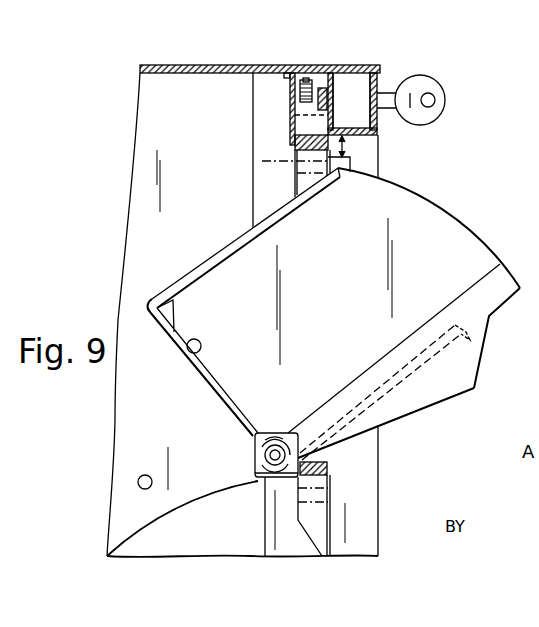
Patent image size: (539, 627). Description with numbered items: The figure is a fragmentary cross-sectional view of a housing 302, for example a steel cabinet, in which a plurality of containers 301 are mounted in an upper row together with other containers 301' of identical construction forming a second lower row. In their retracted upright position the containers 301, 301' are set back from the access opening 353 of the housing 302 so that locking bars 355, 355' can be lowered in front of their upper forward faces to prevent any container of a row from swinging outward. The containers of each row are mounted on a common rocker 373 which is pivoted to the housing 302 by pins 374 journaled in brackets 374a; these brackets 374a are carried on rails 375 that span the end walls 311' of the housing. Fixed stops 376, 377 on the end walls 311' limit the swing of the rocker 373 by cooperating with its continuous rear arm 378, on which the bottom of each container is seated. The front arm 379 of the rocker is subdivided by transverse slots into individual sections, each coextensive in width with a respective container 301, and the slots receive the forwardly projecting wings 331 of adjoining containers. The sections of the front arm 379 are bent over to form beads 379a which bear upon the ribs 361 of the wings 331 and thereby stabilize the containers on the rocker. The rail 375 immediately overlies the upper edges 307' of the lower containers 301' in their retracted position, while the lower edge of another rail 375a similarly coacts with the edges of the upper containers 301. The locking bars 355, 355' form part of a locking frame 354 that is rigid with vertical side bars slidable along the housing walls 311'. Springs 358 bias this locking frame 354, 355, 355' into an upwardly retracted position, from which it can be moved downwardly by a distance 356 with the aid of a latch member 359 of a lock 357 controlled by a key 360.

The containers 301 is at (340, 313).
The containers 301' is at (242, 568).
The housing 302 is at (177, 65).
The upper edges 307' is at (145, 518).
The end walls 311' is at (206, 314).
The wings 331 is at (453, 392).
The access opening 353 is at (372, 153).
The locking frame 354 is at (303, 180).
The locking bar 355 is at (262, 161).
The locking bar 355' is at (335, 508).
The clearance gap 356 is at (347, 160).
The lock 357 is at (377, 66).
The springs 358 is at (300, 86).
The latch member 359 is at (360, 83).
The key 360 is at (444, 102).
The ribs 361 is at (462, 350).
The rocker 373 is at (223, 413).
The pins 374 is at (273, 448).
The brackets 374a is at (254, 455).
The rail 375 is at (257, 483).
The rail 375a is at (290, 125).
The fixed stop 376 is at (138, 481).
The fixed stop 377 is at (200, 340).
The rear arm 378 is at (189, 364).
The front arm 379 is at (397, 385).
The beads 379a is at (451, 327).